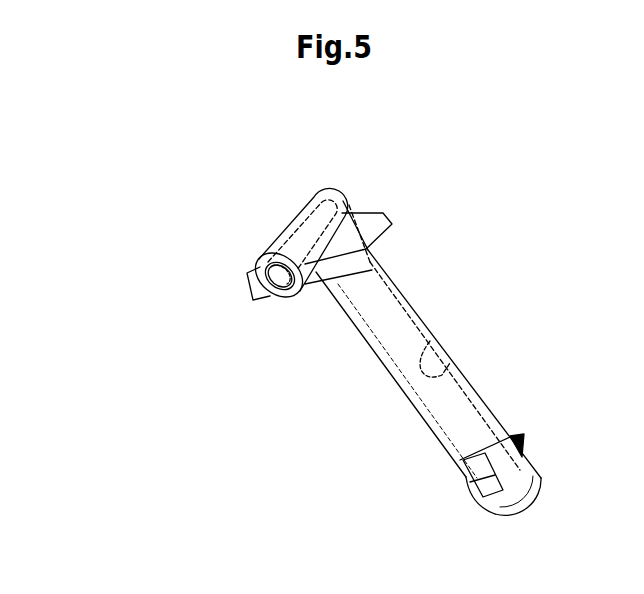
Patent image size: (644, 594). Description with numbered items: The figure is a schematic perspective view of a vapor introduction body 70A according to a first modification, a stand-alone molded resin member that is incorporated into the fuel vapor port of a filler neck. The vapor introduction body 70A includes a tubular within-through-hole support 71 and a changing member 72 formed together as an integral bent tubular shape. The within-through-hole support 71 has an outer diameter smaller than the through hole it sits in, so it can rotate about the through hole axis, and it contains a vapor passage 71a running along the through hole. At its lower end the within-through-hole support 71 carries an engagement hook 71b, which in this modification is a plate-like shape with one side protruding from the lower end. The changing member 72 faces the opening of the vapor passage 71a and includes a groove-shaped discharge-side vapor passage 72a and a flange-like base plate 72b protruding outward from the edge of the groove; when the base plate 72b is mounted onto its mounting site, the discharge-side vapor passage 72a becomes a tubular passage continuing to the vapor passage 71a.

The vapor introduction body 70A is at (466, 175).
The within-through-hole support 71 is at (405, 293).
The vapor passage 71a is at (455, 370).
The engagement hook 71b is at (507, 440).
The changing member 72 is at (301, 232).
The discharge-side vapor passage 72a is at (270, 265).
The base plate 72b is at (246, 274).